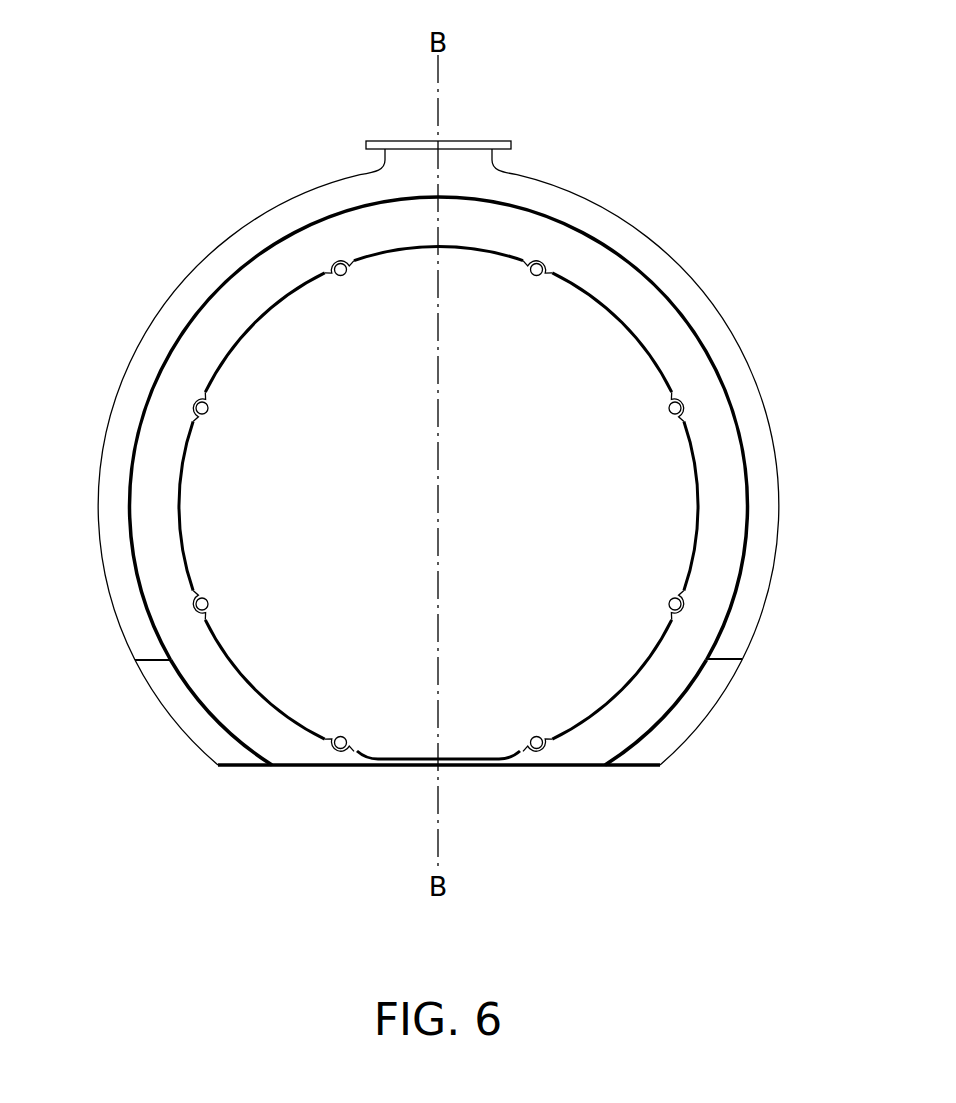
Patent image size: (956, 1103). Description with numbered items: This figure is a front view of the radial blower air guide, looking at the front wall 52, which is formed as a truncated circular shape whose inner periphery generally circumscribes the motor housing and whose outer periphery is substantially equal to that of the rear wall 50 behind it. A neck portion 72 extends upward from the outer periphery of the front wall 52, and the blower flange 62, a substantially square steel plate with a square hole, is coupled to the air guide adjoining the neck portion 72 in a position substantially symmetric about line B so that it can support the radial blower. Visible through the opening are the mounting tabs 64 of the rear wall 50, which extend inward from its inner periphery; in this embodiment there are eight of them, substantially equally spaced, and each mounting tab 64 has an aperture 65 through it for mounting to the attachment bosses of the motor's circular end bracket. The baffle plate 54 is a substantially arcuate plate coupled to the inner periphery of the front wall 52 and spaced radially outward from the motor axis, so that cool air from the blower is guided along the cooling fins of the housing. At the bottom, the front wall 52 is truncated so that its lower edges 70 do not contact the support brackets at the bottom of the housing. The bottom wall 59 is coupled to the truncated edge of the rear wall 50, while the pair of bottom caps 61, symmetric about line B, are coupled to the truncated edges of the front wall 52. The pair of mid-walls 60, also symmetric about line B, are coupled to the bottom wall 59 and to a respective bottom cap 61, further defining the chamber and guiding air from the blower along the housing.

The rear wall 50 is at (603, 737).
The front wall 52 is at (778, 481).
The baffle plate 54 is at (636, 262).
The bottom wall 59 is at (287, 768).
The mid-walls 60 is at (200, 725).
The bottom caps 61 is at (162, 666).
The blower flange 62 is at (502, 140).
The mounting tabs 64 is at (212, 413).
The aperture 65 is at (336, 263).
The lower edges 70 is at (140, 660).
The neck portion 72 is at (512, 158).